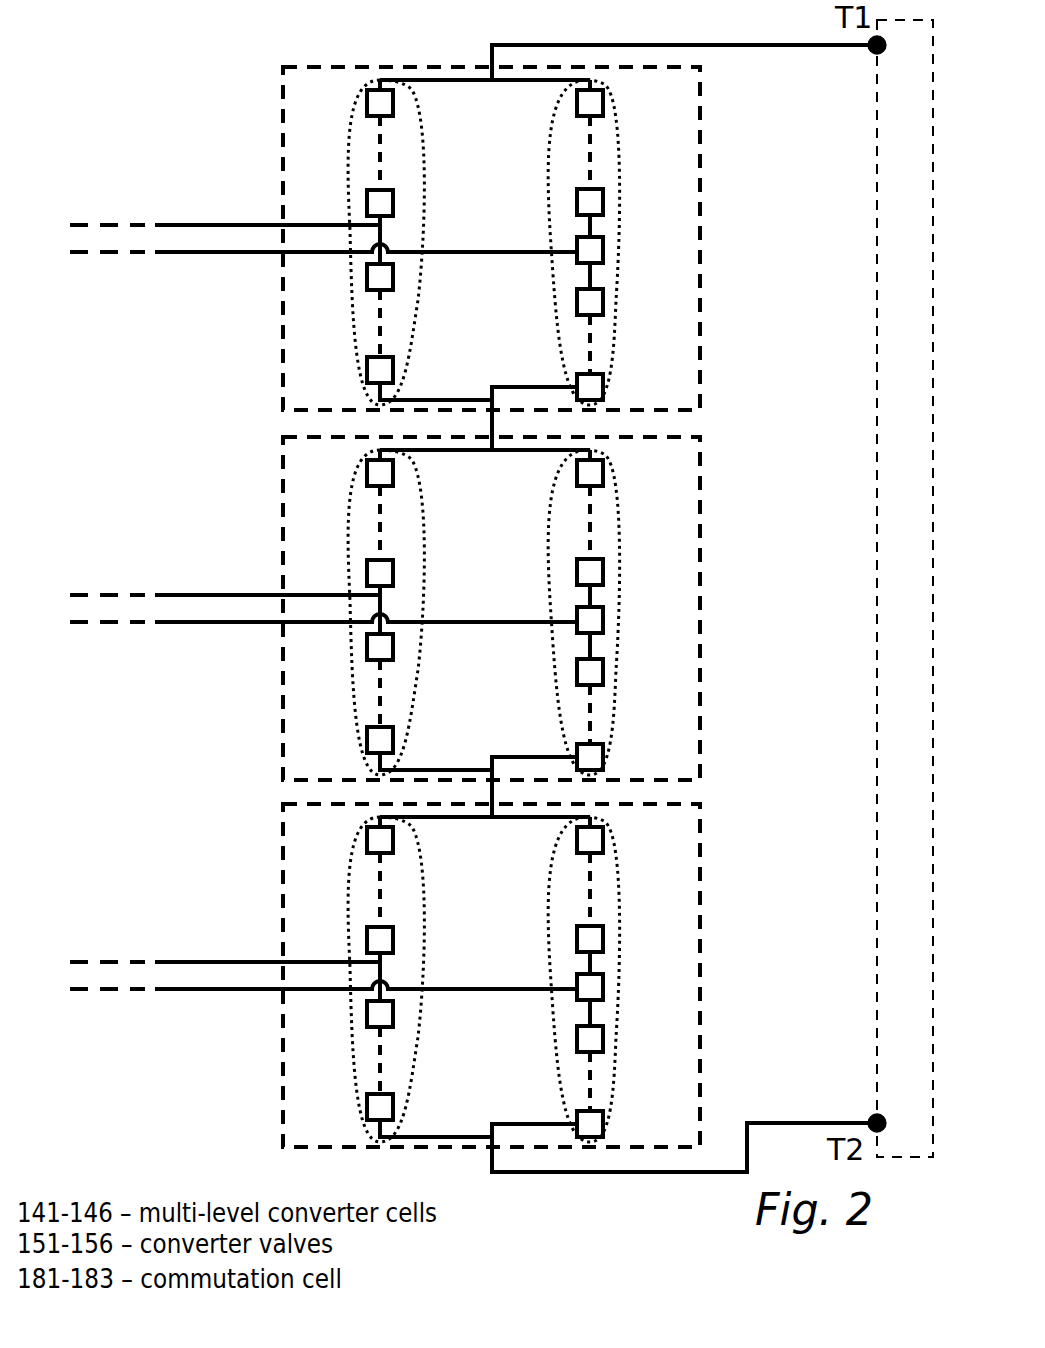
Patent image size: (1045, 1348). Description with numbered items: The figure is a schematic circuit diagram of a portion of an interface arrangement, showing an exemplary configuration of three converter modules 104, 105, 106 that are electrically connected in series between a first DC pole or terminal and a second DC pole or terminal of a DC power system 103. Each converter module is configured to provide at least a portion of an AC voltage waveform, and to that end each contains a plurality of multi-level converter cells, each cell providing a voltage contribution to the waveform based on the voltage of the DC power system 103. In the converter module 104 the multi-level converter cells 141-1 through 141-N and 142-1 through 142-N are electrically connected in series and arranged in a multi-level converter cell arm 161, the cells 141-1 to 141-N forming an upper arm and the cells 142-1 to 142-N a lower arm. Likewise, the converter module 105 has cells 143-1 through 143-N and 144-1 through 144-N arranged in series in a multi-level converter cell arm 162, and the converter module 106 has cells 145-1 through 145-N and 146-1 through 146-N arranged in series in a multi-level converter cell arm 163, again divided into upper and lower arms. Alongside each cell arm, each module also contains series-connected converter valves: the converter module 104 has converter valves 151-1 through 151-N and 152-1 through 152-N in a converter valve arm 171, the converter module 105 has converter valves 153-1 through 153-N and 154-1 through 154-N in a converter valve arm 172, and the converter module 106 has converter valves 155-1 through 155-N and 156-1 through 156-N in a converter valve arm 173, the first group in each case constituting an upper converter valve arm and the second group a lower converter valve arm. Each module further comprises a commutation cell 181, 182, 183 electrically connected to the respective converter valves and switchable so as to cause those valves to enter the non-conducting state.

The DC power system 103 is at (877, 322).
The converter module 104 is at (283, 114).
The converter module 105 is at (555, 608).
The converter module 106 is at (556, 975).
The multi-level converter cell 141-N is at (602, 102).
The multi-level converter cell 141-1 is at (603, 202).
The multi-level converter cell 142-N is at (603, 303).
The multi-level converter cell 142-1 is at (603, 387).
The multi-level converter cell 143-N is at (635, 491).
The multi-level converter cell 143-1 is at (633, 558).
The multi-level converter cell 144-N is at (635, 684).
The multi-level converter cell 144-1 is at (633, 746).
The multi-level converter cell 145-N is at (635, 858).
The multi-level converter cell 145-1 is at (633, 925).
The multi-level converter cell 146-N is at (635, 1051).
The multi-level converter cell 146-1 is at (633, 1113).
The converter valve 151-N is at (395, 107).
The converter valve 151-1 is at (393, 207).
The converter valve 152-N is at (393, 278).
The converter valve 152-1 is at (393, 373).
The converter valve 153-N is at (448, 491).
The converter valve 153-1 is at (443, 554).
The converter valve 154-N is at (448, 657).
The converter valve 154-1 is at (443, 721).
The converter valve 155-N is at (448, 858).
The converter valve 155-1 is at (443, 921).
The converter valve 156-N is at (448, 1024).
The converter valve 156-1 is at (443, 1088).
The multi-level converter cell arm 161 is at (545, 217).
The multi-level converter cell arm 162 is at (541, 612).
The multi-level converter cell arm 163 is at (541, 979).
The converter valve arm 171 is at (352, 172).
The converter valve arm 172 is at (357, 612).
The converter valve arm 173 is at (357, 979).
The commutation cell 181 is at (603, 250).
The commutation cell 182 is at (621, 614).
The commutation cell 183 is at (621, 981).